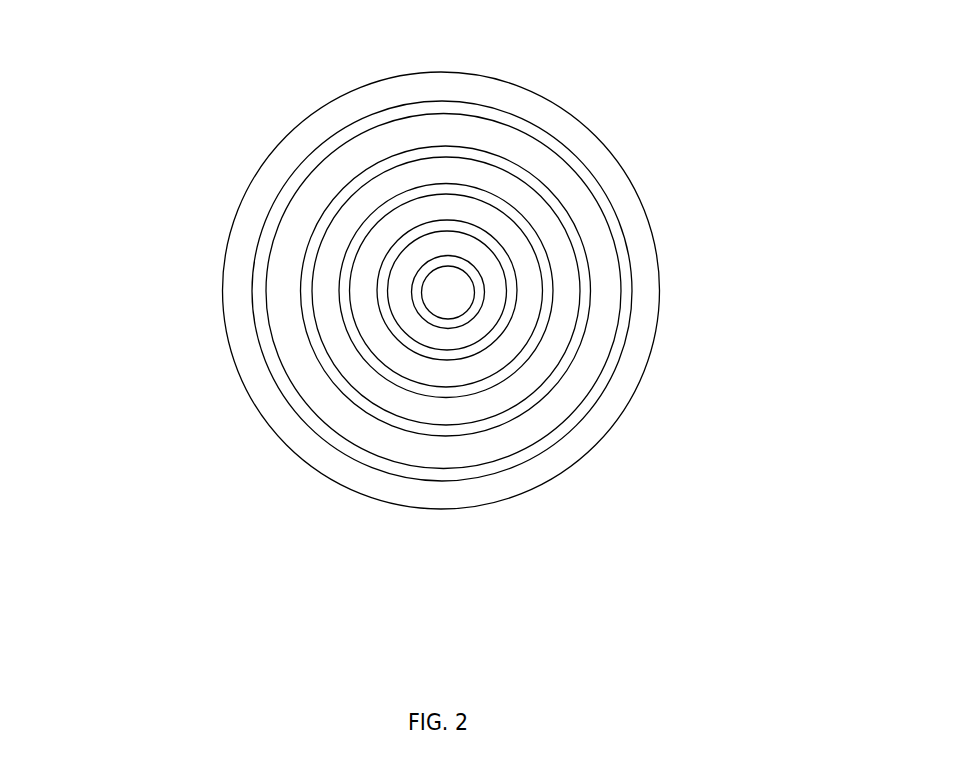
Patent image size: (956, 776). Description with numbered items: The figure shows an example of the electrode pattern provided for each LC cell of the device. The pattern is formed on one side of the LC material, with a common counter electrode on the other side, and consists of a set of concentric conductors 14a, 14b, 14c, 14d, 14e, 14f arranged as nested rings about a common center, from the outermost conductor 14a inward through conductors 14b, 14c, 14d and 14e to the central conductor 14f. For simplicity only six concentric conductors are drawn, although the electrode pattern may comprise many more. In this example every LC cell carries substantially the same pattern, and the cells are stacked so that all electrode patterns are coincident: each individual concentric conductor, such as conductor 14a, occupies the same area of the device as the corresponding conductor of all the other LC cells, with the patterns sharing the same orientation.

The concentric conductor 14a is at (597, 159).
The concentric conductor 14b is at (604, 273).
The concentric conductor 14c is at (555, 342).
The concentric conductor 14d is at (456, 380).
The concentric conductor 14e is at (398, 313).
The concentric conductor 14f is at (443, 292).